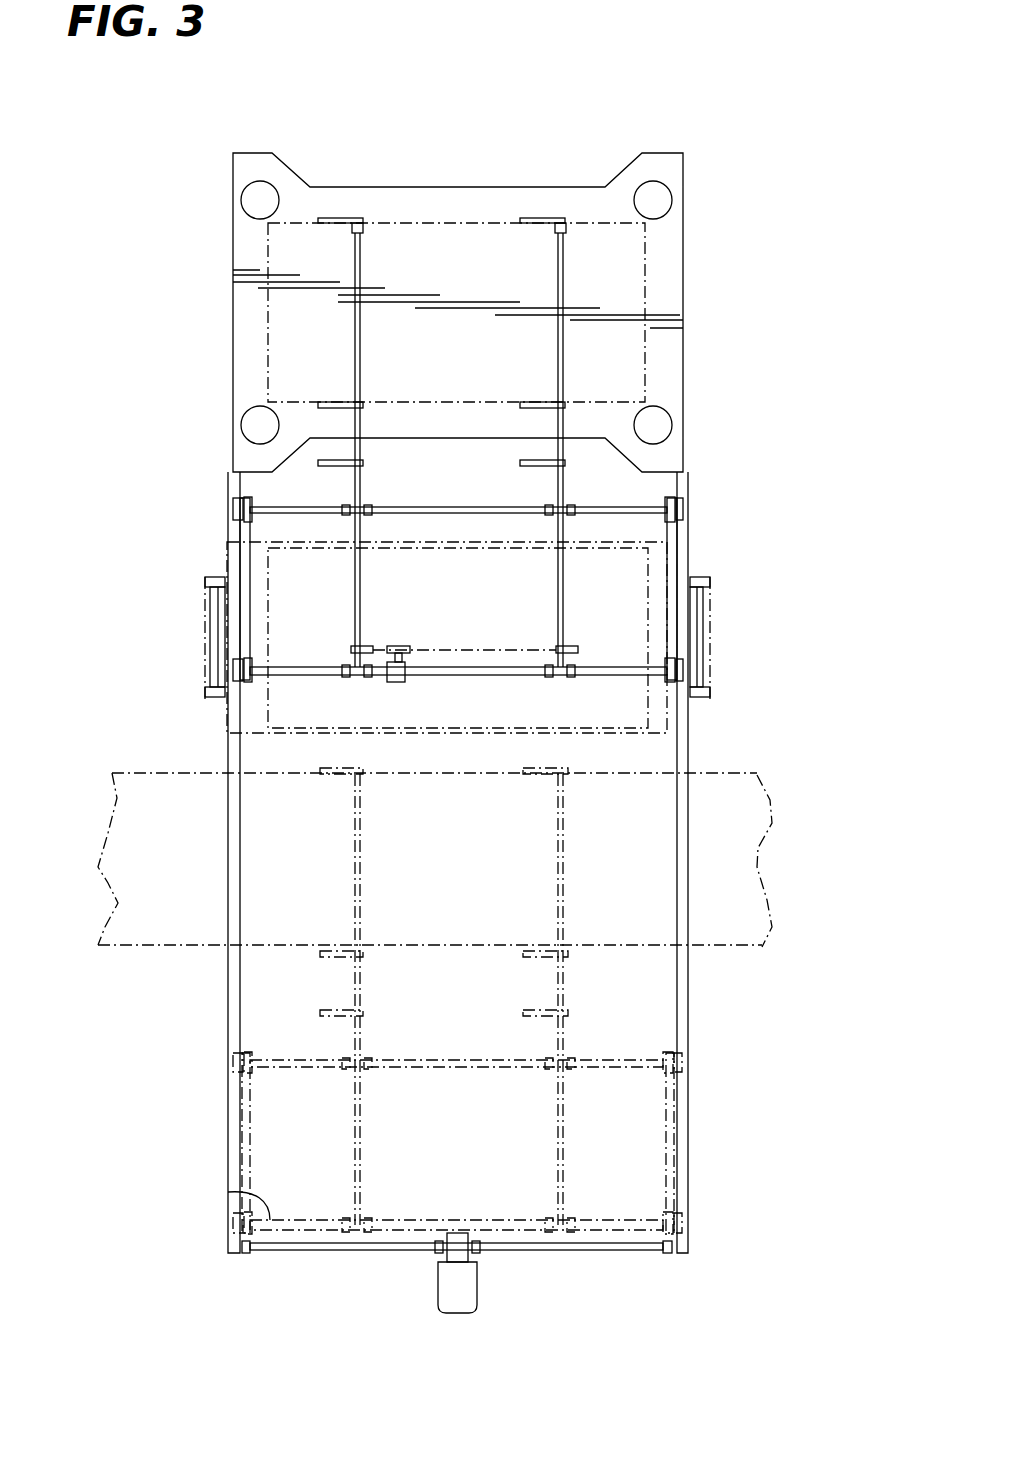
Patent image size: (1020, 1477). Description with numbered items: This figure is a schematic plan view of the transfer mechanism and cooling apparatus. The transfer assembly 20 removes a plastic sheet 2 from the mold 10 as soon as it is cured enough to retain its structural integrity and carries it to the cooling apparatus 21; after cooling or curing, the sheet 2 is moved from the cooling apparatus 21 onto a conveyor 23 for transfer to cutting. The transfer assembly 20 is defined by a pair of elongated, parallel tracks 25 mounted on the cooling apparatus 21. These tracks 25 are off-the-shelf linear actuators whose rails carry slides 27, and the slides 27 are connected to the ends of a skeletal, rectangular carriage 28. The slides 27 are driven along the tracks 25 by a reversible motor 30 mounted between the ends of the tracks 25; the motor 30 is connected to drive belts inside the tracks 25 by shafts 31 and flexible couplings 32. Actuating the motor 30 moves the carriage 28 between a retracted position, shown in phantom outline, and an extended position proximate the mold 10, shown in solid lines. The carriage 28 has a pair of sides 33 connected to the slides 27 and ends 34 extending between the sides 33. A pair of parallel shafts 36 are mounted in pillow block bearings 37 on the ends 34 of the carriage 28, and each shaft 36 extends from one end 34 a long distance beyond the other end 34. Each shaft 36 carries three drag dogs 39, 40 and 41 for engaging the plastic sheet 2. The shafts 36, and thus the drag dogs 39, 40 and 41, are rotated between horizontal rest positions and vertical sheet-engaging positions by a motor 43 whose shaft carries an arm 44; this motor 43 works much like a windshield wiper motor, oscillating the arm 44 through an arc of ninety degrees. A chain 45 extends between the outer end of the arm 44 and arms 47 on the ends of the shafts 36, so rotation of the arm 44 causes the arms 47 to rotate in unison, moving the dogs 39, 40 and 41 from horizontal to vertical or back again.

The sheet 2 is at (447, 222).
The mold 10 is at (233, 325).
The transfer assembly 20 is at (228, 1253).
The cooling apparatus 21 is at (715, 645).
The conveyor 23 is at (765, 804).
The tracks 25 is at (228, 1003).
The slides 27 is at (233, 508).
The carriage 28 is at (298, 677).
The reversible motor 30 is at (470, 1296).
The shafts 31 is at (348, 1252).
The flexible couplings 32 is at (474, 1241).
The sides 33 is at (250, 600).
The ends 34 is at (510, 507).
The shafts 36 is at (557, 252).
The pillow block bearings 37 is at (250, 516).
The drag dog 39 is at (351, 218).
The drag dog 40 is at (330, 402).
The drag dog 41 is at (540, 466).
The motor 43 is at (397, 682).
The arm 44 is at (398, 646).
The chain 45 is at (457, 650).
The arms 47 is at (362, 655).